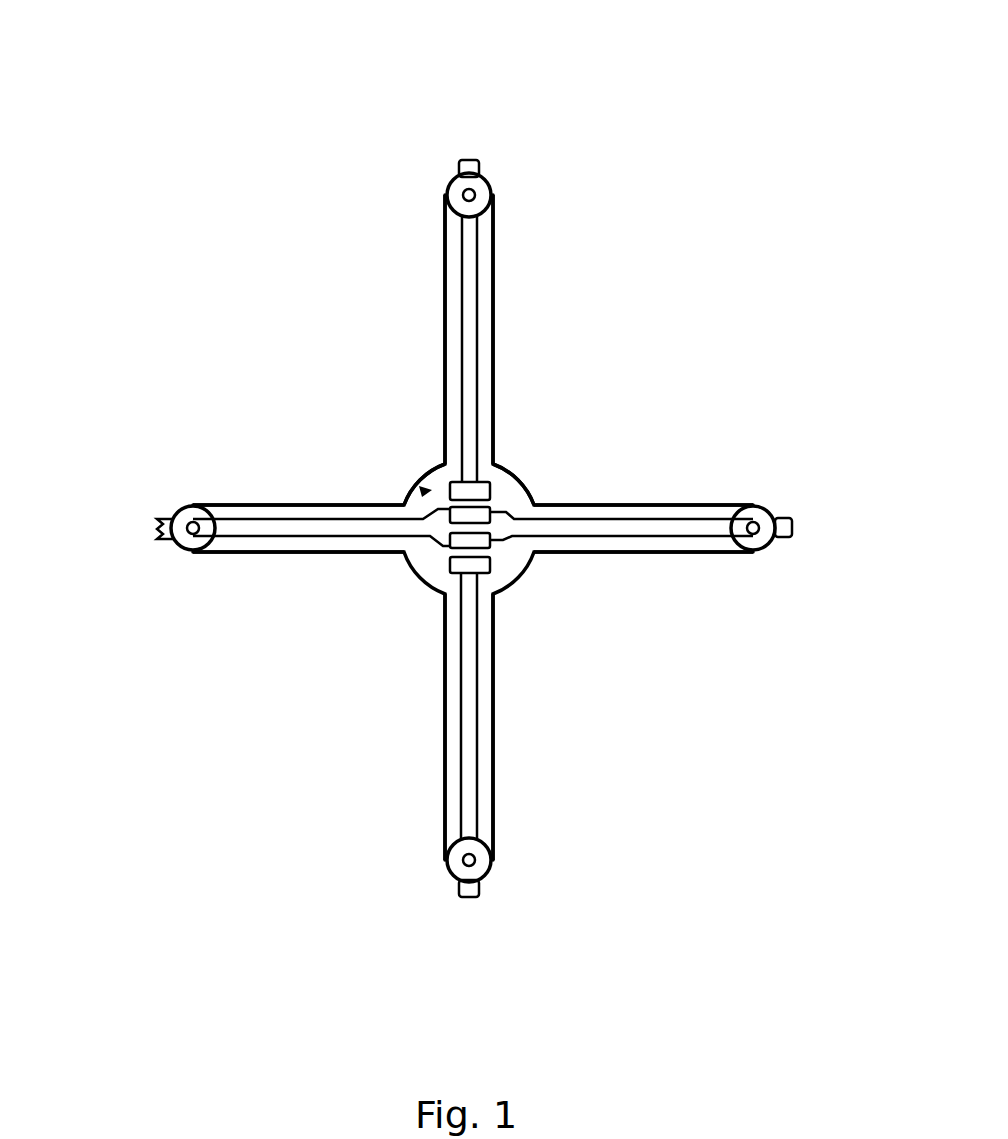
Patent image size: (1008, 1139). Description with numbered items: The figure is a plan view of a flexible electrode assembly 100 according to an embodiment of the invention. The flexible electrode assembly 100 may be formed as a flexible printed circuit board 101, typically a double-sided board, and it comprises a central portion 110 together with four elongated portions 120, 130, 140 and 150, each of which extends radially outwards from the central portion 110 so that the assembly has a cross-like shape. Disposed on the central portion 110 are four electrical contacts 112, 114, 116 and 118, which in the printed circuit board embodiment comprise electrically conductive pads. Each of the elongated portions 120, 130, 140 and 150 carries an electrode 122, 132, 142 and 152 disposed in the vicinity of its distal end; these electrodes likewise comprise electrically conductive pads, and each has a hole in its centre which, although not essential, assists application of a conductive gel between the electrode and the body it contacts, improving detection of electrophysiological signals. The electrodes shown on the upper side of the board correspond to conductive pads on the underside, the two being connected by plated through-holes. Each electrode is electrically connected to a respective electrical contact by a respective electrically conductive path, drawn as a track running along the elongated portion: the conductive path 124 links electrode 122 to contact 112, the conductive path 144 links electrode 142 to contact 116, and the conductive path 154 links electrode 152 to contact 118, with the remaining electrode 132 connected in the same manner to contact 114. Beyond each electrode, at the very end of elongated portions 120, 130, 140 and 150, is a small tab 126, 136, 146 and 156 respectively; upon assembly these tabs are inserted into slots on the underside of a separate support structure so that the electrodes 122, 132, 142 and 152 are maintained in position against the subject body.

The flexible electrode assembly 100 is at (748, 86).
The flexible printed circuit board 101 is at (420, 491).
The central portion 110 is at (496, 477).
The electrical contact 112 is at (460, 490).
The electrical contact 114 is at (468, 513).
The electrical contact 116 is at (458, 546).
The electrical contact 118 is at (465, 562).
The elongated portion 120 is at (495, 283).
The electrode 122 is at (474, 188).
The electrically conductive path 124 is at (470, 362).
The tab 126 is at (463, 165).
The elongated portion 130 is at (655, 503).
The electrode 132 is at (760, 510).
The tab 136 is at (779, 530).
The elongated portion 140 is at (494, 808).
The electrode 142 is at (478, 865).
The electrically conductive path 144 is at (470, 727).
The tab 146 is at (457, 890).
The elongated portion 150 is at (248, 505).
The electrode 152 is at (193, 538).
The electrically conductive path 154 is at (314, 523).
The tab 156 is at (155, 518).